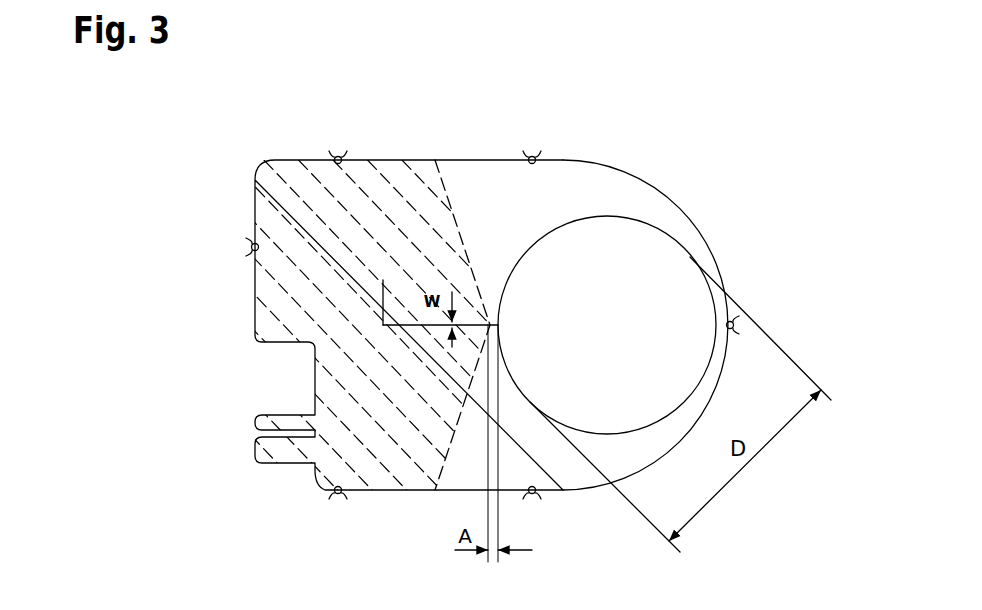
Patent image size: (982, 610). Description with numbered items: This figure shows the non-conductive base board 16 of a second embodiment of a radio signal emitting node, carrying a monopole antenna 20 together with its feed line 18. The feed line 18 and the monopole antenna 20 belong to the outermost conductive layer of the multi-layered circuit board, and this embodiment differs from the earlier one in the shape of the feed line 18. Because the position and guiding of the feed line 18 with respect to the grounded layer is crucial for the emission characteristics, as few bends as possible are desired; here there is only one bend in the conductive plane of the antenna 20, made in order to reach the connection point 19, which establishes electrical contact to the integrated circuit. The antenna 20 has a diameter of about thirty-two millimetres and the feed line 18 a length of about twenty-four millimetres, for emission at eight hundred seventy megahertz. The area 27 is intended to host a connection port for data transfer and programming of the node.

The non-conductive base board 16 is at (600, 187).
The feed line 18 is at (400, 325).
The connection point 19 is at (383, 280).
The monopole antenna 20 is at (650, 253).
The area 27 is at (225, 470).